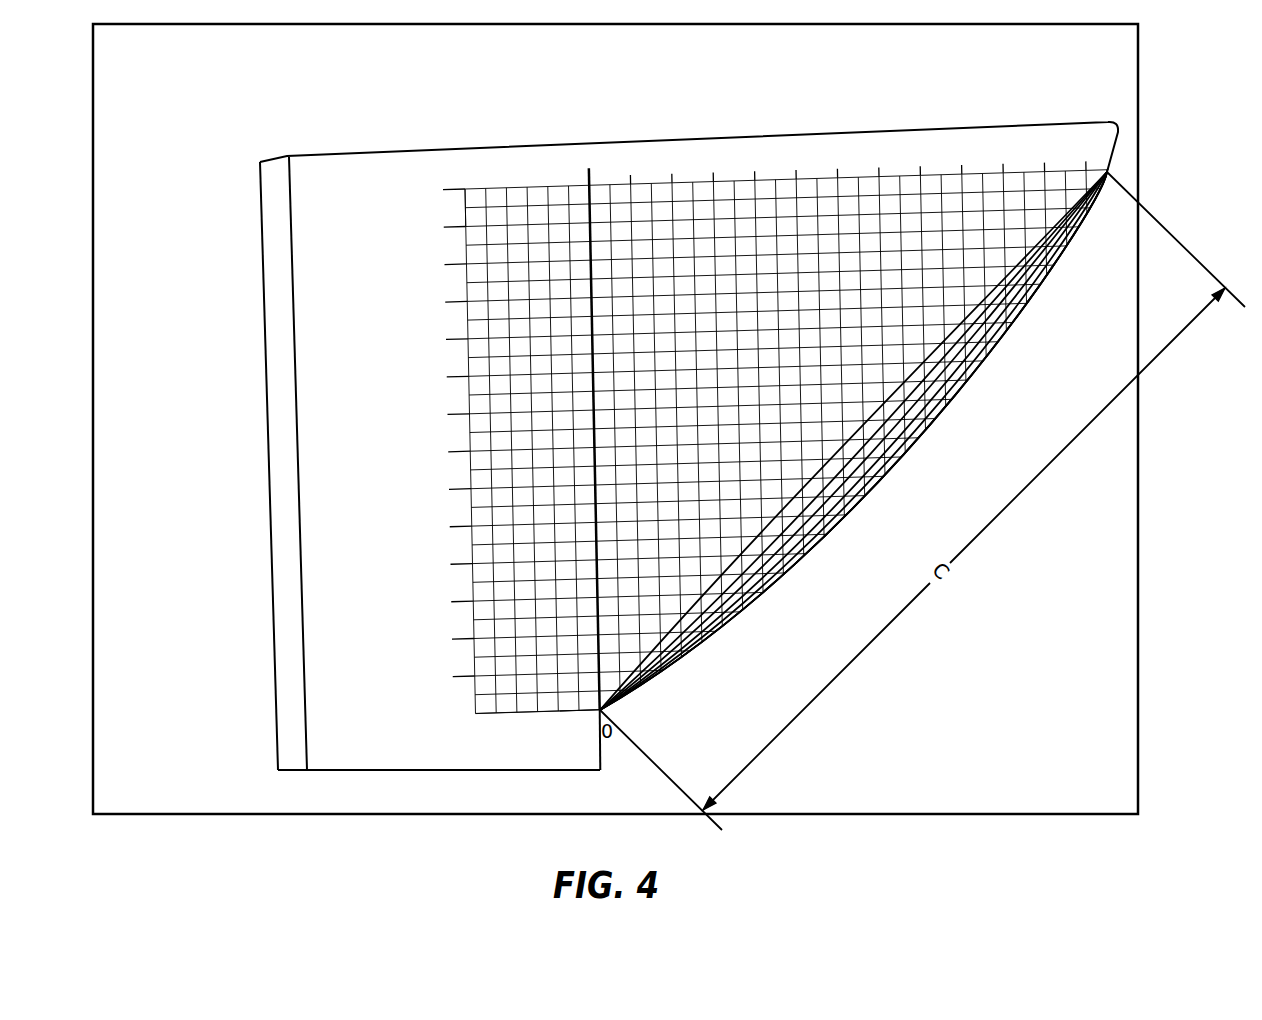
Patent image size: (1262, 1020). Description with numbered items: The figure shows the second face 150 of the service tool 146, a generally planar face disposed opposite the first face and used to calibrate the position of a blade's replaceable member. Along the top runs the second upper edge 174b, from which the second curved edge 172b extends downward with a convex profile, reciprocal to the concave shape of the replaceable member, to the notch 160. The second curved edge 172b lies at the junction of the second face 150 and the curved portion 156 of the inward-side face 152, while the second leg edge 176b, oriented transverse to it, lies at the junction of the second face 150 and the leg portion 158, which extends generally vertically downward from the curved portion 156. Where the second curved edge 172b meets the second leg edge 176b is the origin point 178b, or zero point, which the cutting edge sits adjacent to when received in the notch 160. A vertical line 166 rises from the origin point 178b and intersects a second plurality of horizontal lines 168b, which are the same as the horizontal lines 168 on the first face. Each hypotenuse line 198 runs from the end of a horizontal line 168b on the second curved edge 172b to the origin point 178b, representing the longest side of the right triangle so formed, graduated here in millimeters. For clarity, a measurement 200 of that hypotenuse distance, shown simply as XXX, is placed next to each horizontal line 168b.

The second face 150 is at (307, 173).
The service tool 146 is at (345, 193).
The measurement 200 is at (427, 177).
The vertical line 166 is at (598, 216).
The grid 168 is at (467, 184).
The second plurality of horizontal lines 168b is at (477, 222).
The hypotenuse lines 198 is at (1037, 240).
The second upper edge 174b is at (1085, 120).
The second curved edge 172b is at (950, 403).
The curved portion 156 is at (853, 441).
The inward-side face 152 is at (880, 488).
The notch 160 is at (603, 710).
The origin point 178b is at (600, 710).
The leg portion 158 is at (598, 755).
The second leg edge 176b is at (603, 743).